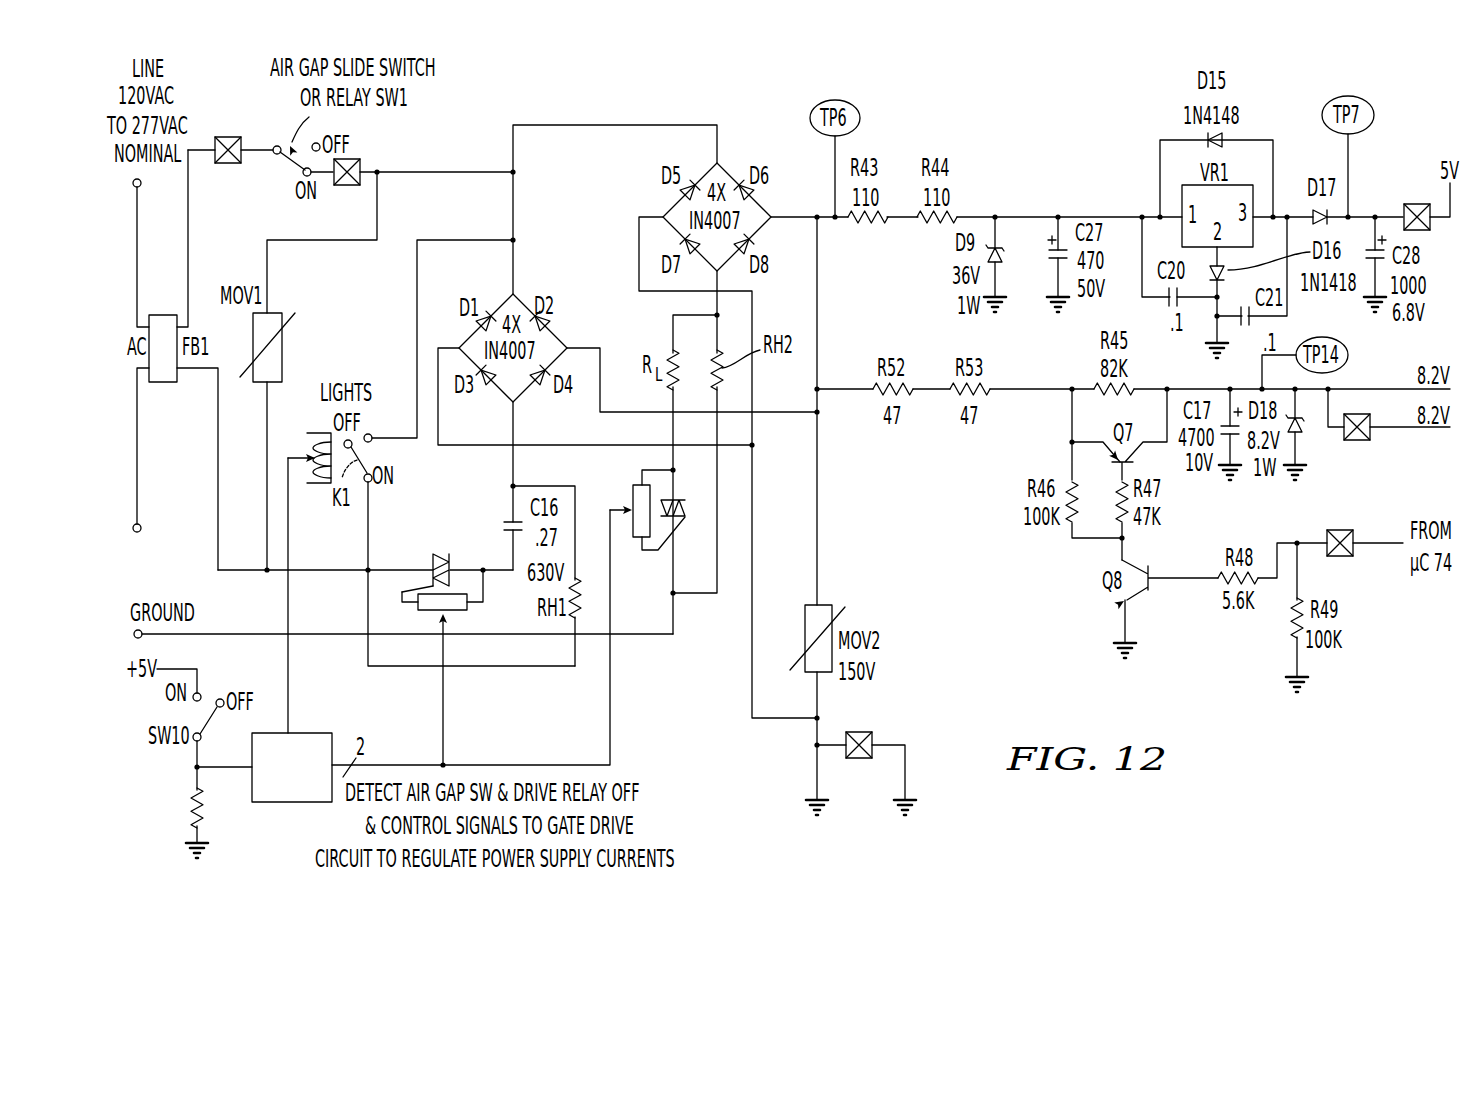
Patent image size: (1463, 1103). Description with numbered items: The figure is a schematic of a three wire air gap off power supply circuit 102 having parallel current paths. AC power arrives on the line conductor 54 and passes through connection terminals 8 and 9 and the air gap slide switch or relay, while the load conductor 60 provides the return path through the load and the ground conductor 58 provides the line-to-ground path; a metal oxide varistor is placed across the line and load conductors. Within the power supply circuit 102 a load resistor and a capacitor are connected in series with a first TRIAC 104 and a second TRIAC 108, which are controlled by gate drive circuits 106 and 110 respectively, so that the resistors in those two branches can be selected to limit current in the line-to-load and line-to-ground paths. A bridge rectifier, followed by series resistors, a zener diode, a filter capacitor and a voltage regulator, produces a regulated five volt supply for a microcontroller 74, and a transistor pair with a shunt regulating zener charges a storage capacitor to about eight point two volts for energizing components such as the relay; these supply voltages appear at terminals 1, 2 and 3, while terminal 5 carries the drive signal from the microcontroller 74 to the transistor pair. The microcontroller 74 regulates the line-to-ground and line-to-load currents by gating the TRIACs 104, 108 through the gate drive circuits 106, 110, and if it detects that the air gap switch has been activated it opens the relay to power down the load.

The connector pin 1 (ground) 1 is at (861, 766).
The connector pin 2 (8.2V) 2 is at (1389, 433).
The connector pin 3 (5V) 3 is at (1427, 202).
The connector pin 5 (from microcontroller) 5 is at (1340, 562).
The line input terminal 8 is at (230, 167).
The switched line terminal 9 is at (344, 187).
The line conductor 54 is at (138, 227).
The ground conductor 58 is at (235, 632).
The load conductor 60 is at (138, 435).
The microcontroller 74 is at (320, 733).
The power supply circuit 102 is at (958, 117).
The TRIAC 104 is at (443, 554).
The gate drive circuit 106 is at (470, 612).
The TRIAC 108 is at (685, 500).
The gate drive circuit 110 is at (633, 492).